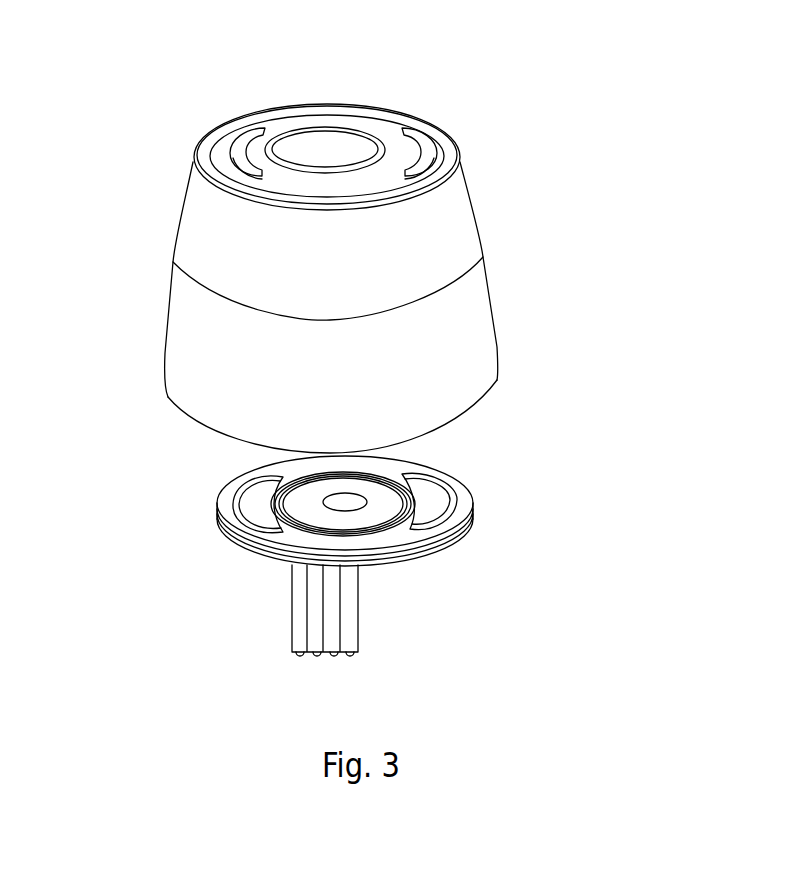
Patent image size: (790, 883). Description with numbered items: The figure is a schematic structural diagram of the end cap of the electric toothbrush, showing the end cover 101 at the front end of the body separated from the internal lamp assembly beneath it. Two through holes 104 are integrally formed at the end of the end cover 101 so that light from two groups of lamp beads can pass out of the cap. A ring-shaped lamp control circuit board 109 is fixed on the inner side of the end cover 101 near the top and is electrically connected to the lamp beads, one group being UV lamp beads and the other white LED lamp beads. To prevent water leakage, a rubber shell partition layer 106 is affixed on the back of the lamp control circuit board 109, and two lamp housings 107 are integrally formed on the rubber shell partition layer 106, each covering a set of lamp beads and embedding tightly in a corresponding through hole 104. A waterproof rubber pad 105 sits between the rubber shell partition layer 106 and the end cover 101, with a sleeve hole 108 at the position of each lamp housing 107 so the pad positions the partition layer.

The end cover 101 is at (452, 380).
The through hole 104 is at (406, 137).
The waterproof rubber pad 105 is at (410, 537).
The rubber shell partition layer 106 is at (390, 565).
The lamp housing 107 is at (245, 495).
The sleeve hole 108 is at (462, 502).
The lamp control circuit board 109 is at (237, 555).